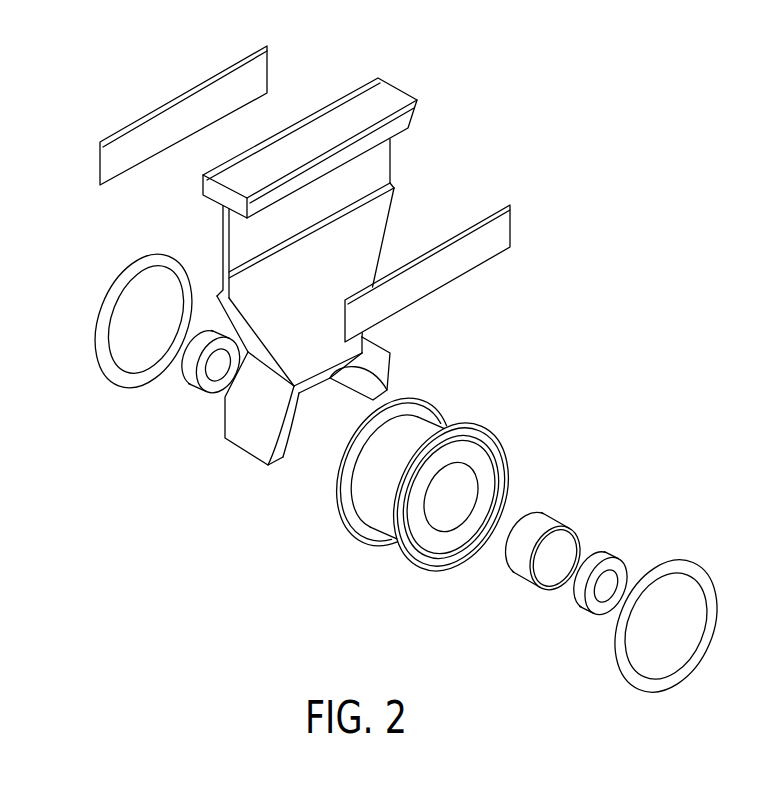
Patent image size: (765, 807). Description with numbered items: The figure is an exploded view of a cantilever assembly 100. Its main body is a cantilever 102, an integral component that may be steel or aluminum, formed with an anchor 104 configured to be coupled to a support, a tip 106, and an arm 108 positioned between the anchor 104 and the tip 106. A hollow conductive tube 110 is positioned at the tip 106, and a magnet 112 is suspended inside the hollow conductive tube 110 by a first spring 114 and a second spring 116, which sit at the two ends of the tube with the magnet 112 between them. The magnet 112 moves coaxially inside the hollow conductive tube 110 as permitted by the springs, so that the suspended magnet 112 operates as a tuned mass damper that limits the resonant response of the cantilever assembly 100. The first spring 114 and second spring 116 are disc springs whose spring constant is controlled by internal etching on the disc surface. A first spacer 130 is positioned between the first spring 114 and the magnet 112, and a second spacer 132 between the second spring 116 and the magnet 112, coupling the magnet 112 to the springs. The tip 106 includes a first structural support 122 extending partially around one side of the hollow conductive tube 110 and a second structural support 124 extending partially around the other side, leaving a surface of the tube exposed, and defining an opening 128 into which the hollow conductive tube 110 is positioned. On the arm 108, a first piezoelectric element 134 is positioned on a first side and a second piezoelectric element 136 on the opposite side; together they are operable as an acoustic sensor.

The cantilever assembly 100 is at (117, 105).
The cantilever 102 is at (395, 78).
The anchor 104 is at (403, 100).
The tip 106 is at (367, 366).
The arm 108 is at (385, 208).
The hollow conductive tube 110 is at (363, 532).
The magnet 112 is at (510, 583).
The first spring 114 is at (95, 366).
The second spring 116 is at (639, 681).
The first structural support 122 is at (235, 447).
The second structural support 124 is at (378, 380).
The opening 128 is at (315, 420).
The first spacer 130 is at (196, 391).
The second spacer 132 is at (578, 613).
The first piezoelectric element 134 is at (105, 168).
The second piezoelectric element 136 is at (502, 233).